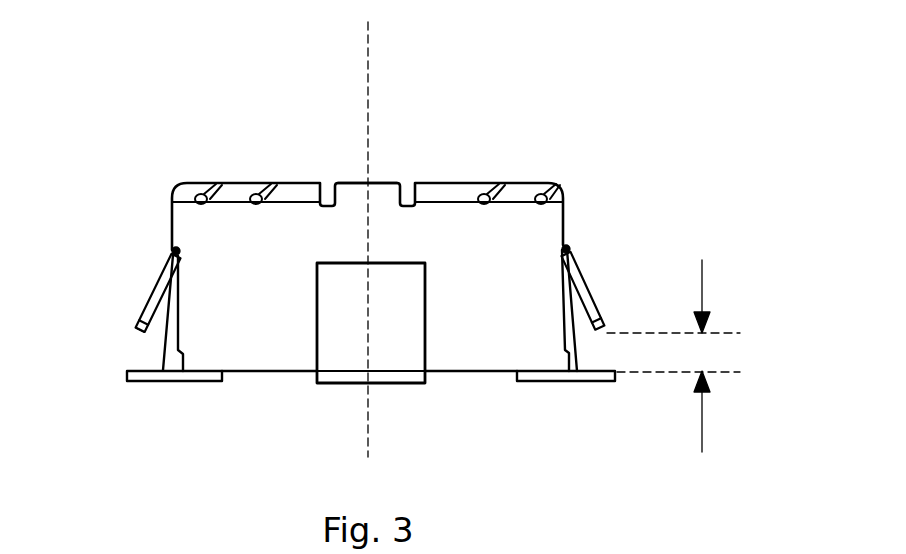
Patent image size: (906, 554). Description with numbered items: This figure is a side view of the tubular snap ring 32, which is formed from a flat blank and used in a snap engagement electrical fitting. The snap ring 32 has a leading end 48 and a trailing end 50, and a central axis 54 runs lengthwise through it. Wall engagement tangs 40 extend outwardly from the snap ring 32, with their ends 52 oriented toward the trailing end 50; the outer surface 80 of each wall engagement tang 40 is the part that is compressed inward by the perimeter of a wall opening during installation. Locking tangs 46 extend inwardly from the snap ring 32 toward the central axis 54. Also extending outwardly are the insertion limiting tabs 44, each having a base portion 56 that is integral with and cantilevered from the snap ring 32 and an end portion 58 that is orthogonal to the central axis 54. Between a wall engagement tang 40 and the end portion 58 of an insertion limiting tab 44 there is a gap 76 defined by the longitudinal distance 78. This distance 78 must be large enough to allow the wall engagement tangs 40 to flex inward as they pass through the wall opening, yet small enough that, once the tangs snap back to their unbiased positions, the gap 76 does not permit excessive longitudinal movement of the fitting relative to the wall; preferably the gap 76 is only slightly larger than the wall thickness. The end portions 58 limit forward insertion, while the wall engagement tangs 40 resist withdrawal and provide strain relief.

The snap ring 32 is at (492, 112).
The wall engagement tangs 40 is at (156, 293).
The insertion limiting tabs 44 is at (360, 326).
The locking tangs 46 is at (306, 192).
The leading end 48 is at (388, 183).
The trailing end 50 is at (460, 372).
The ends 52 is at (137, 333).
The central axis 54 is at (367, 62).
The base portion 56 is at (180, 346).
The end portion 58 is at (146, 376).
The gap 76 is at (600, 352).
The longitudinal distance 78 is at (703, 353).
The outer surface 80 is at (128, 301).